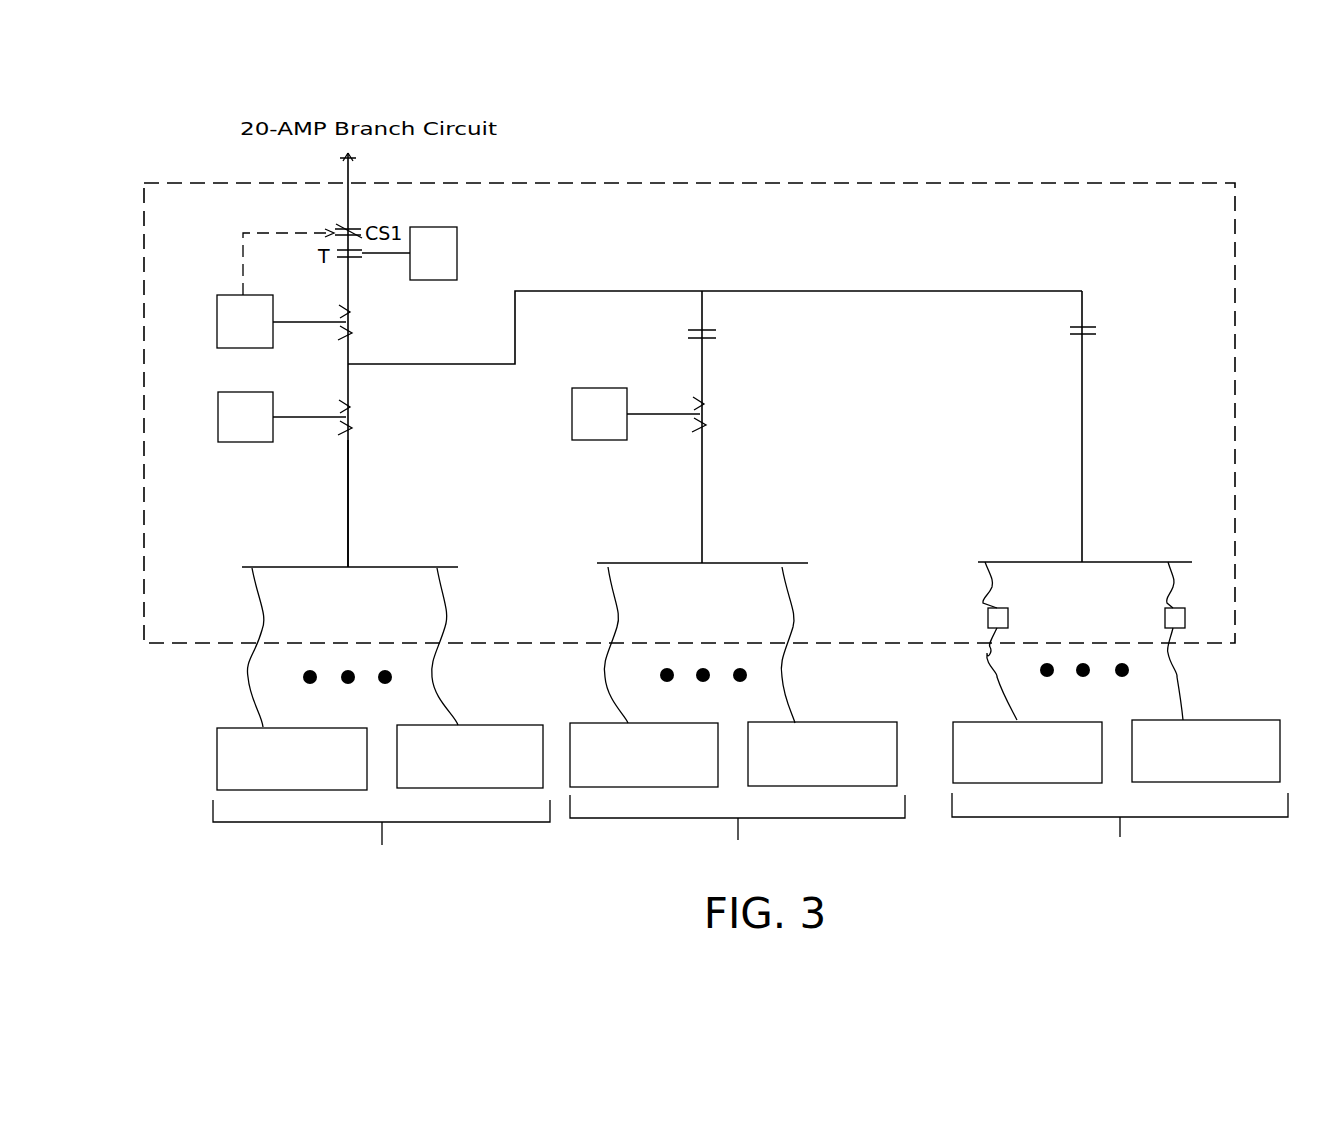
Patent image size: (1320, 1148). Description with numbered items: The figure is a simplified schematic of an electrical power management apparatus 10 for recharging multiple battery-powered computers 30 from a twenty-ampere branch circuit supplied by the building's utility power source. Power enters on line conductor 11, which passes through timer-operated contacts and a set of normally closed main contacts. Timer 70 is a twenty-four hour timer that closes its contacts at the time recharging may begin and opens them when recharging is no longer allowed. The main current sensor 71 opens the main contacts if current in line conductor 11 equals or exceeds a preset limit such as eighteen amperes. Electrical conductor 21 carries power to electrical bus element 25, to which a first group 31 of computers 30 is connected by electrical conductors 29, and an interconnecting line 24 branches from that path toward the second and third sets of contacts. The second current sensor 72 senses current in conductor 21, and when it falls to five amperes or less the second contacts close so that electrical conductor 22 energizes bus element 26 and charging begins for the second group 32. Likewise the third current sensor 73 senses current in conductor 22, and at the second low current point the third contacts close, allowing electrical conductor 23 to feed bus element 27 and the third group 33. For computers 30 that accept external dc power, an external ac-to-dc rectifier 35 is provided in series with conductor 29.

The apparatus 10 is at (905, 162).
The line conductor 11 is at (348, 209).
The electrical conductor 21 is at (349, 503).
The electrical conductor 22 is at (700, 543).
The electrical conductor 23 is at (1082, 455).
The interconnecting line 24 is at (442, 365).
The electrical bus element 25 is at (292, 567).
The electrical bus element 26 is at (643, 563).
The electrical bus element 27 is at (1025, 562).
The electrical conductor 29 is at (251, 707).
The battery-powered computer 30 is at (217, 758).
The group 31 is at (381, 838).
The group 32 is at (737, 834).
The group 33 is at (1120, 832).
The external ac-to-dc rectifier 35 is at (988, 620).
The timer 70 is at (457, 256).
The CS1 current sensor 71 is at (356, 328).
The CS2 current sensor 72 is at (356, 420).
The CS3 current sensor 73 is at (708, 408).